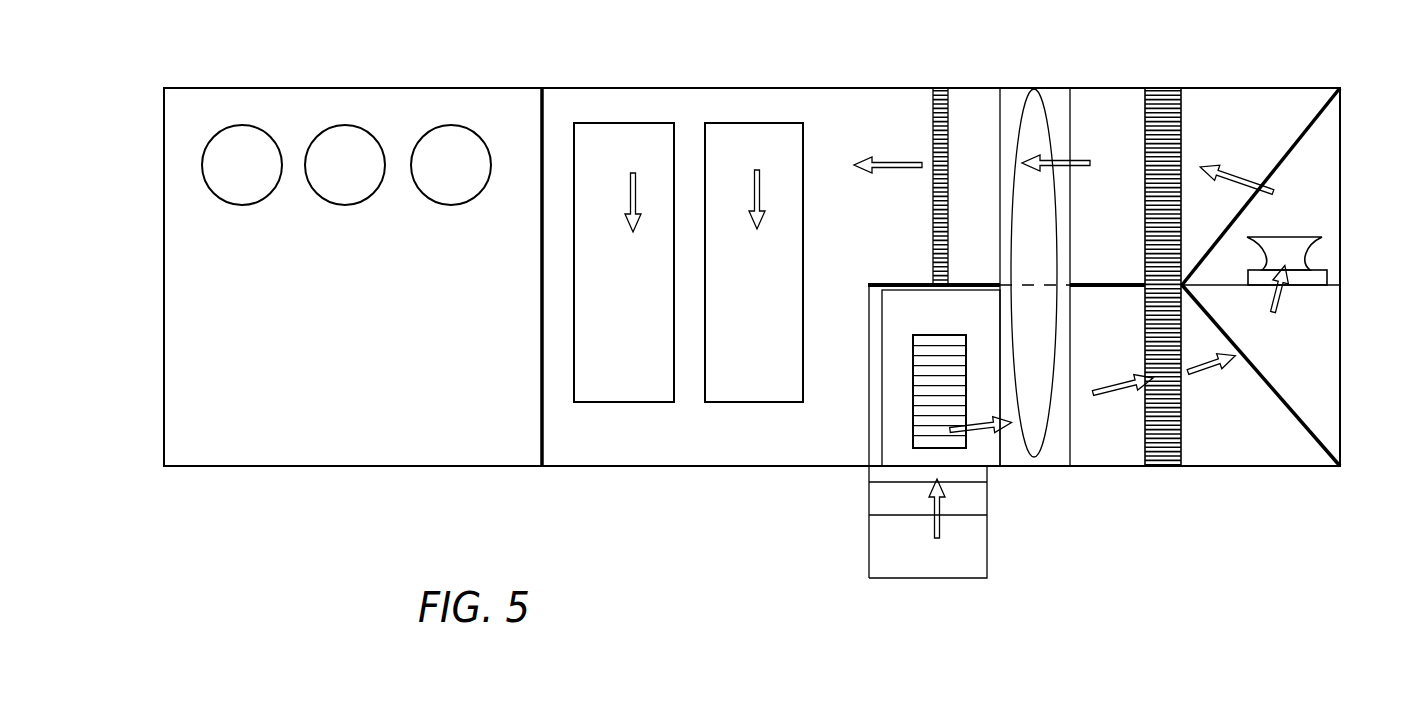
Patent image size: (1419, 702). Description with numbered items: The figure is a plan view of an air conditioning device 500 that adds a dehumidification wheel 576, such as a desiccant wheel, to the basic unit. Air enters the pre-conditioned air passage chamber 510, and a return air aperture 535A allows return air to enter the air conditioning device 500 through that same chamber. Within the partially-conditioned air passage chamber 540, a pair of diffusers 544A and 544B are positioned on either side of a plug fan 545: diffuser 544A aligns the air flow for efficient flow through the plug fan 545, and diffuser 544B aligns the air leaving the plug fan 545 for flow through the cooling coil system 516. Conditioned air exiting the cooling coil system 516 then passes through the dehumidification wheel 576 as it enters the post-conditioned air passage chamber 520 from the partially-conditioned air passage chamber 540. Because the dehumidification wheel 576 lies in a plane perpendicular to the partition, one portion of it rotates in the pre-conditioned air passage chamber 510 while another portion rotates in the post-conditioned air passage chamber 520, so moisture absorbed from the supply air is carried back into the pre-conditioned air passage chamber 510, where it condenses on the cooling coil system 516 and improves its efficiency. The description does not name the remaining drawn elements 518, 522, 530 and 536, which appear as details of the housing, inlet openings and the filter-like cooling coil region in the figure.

The air conditioning device 500 is at (353, 66).
The pre-conditioned air passage chamber 510 is at (1117, 364).
The cooling coil system 516 is at (1168, 115).
The filter inlet face 518 is at (1140, 455).
The post-conditioned air passage chamber 520 is at (1121, 247).
The filter outlet face 522 is at (1190, 454).
The mixing compartment 530 is at (274, 445).
The return air aperture 535A is at (935, 395).
The openings 536 is at (452, 143).
The partially-conditioned air passage chamber 540 is at (1259, 132).
The diffuser 544A is at (1308, 443).
The diffuser 544B is at (1322, 118).
The plug fan 545 is at (1297, 241).
The dehumidification wheel 576 is at (1037, 434).